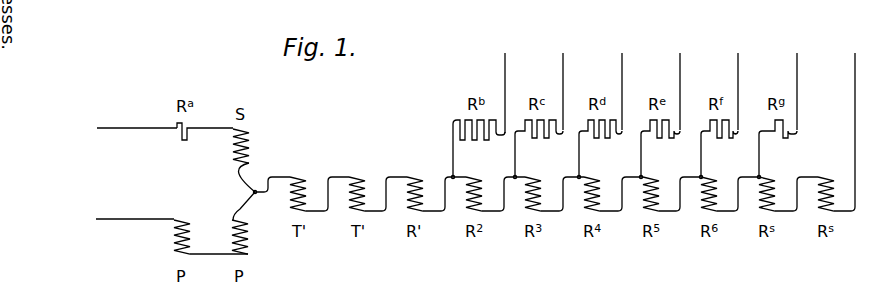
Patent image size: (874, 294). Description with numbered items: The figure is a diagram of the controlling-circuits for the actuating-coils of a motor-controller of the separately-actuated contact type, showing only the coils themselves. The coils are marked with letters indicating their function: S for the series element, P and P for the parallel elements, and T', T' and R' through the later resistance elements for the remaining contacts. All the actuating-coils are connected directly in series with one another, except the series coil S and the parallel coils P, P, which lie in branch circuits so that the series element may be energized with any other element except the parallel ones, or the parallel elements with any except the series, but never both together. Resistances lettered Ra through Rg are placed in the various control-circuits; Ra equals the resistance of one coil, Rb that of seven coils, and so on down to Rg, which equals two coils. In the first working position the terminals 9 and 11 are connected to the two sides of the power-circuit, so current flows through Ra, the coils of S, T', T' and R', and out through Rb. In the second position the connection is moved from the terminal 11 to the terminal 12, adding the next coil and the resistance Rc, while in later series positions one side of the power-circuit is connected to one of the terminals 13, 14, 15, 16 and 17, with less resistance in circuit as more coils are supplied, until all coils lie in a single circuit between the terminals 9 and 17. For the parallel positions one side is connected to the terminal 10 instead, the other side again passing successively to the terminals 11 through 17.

The terminal 9 is at (127, 128).
The terminal 10 is at (122, 219).
The terminal 11 is at (506, 84).
The terminal 12 is at (564, 83).
The terminal 13 is at (623, 83).
The terminal 14 is at (681, 83).
The terminal 15 is at (739, 83).
The terminal 16 is at (798, 83).
The terminal 17 is at (849, 123).